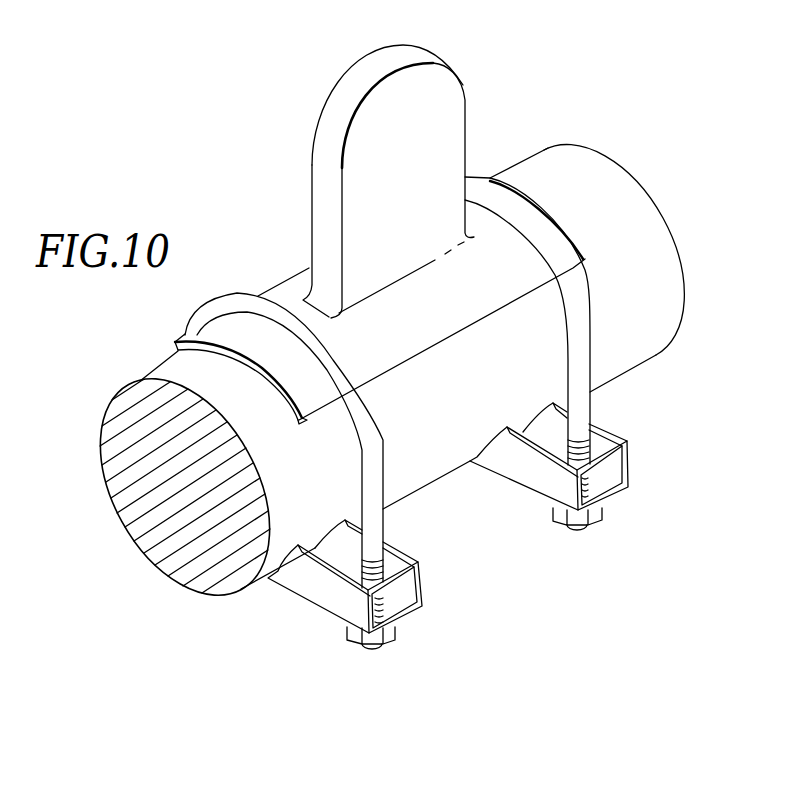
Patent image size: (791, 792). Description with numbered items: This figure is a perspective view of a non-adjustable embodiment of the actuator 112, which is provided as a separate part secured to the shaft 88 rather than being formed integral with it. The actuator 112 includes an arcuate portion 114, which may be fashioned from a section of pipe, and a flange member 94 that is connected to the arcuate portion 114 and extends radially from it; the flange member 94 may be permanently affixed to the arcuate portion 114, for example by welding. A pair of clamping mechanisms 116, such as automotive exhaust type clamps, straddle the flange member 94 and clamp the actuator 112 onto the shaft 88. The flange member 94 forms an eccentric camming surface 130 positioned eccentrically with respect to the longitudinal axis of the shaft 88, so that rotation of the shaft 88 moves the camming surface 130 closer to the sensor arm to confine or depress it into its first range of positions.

The shaft 88 is at (615, 180).
The flange member 94 is at (451, 82).
The actuator 112 is at (562, 114).
The arcuate portion 114 is at (426, 336).
The clamping mechanisms 116 is at (423, 587).
The eccentric camming surface 130 is at (326, 132).